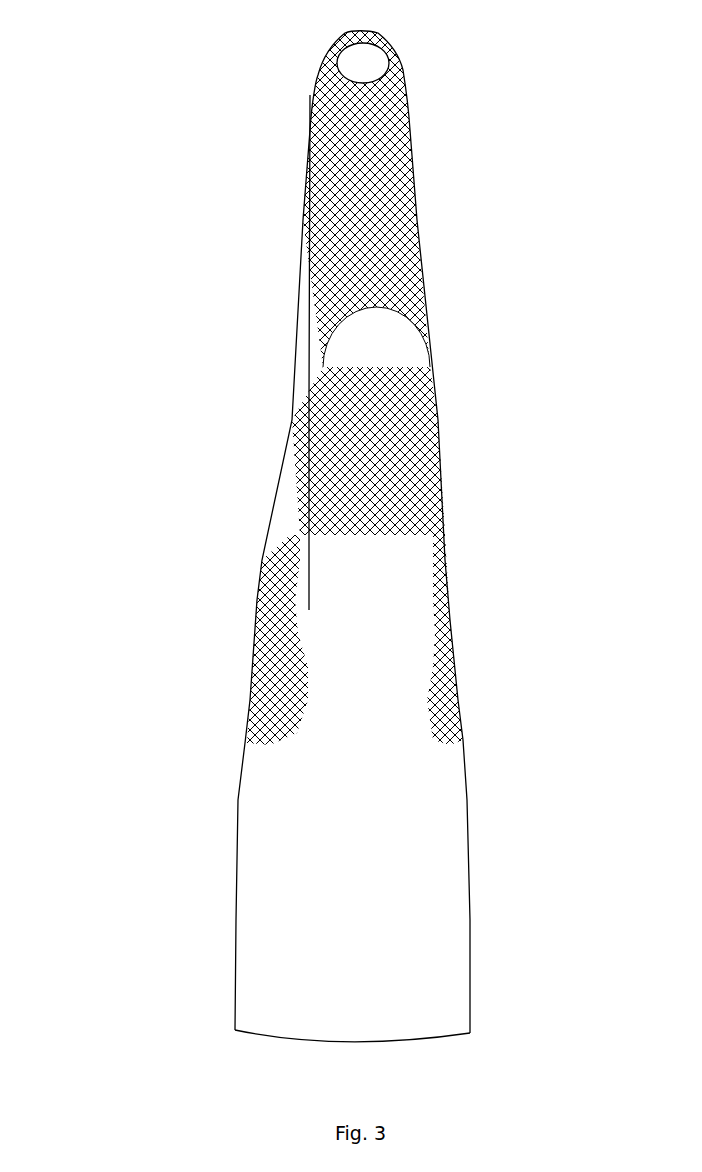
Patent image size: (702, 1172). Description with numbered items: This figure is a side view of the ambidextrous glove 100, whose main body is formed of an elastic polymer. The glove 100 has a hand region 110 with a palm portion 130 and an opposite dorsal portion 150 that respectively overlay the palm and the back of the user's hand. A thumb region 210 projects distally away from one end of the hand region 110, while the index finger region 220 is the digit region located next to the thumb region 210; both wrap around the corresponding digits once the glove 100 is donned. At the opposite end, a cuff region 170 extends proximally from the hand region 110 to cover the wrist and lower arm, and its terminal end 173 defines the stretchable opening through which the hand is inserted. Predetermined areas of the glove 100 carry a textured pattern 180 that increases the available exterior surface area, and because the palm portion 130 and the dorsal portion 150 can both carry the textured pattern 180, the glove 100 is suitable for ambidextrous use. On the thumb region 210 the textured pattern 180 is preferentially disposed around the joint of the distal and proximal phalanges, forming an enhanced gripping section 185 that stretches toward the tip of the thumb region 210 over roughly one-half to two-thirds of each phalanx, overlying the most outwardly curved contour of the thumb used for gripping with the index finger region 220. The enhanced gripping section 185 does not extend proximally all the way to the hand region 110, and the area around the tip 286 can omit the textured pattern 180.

The glove 100 is at (137, 162).
The hand region 110 is at (453, 813).
The palm portion 130 is at (453, 705).
The dorsal portion 150 is at (258, 653).
The cuff region 170 is at (240, 965).
The terminal end 173 is at (452, 1027).
The textured pattern 180 is at (337, 217).
The enhanced gripping section 185 is at (432, 462).
The thumb region 210 is at (335, 458).
The index finger region 220 is at (405, 140).
The tip 286 is at (397, 333).